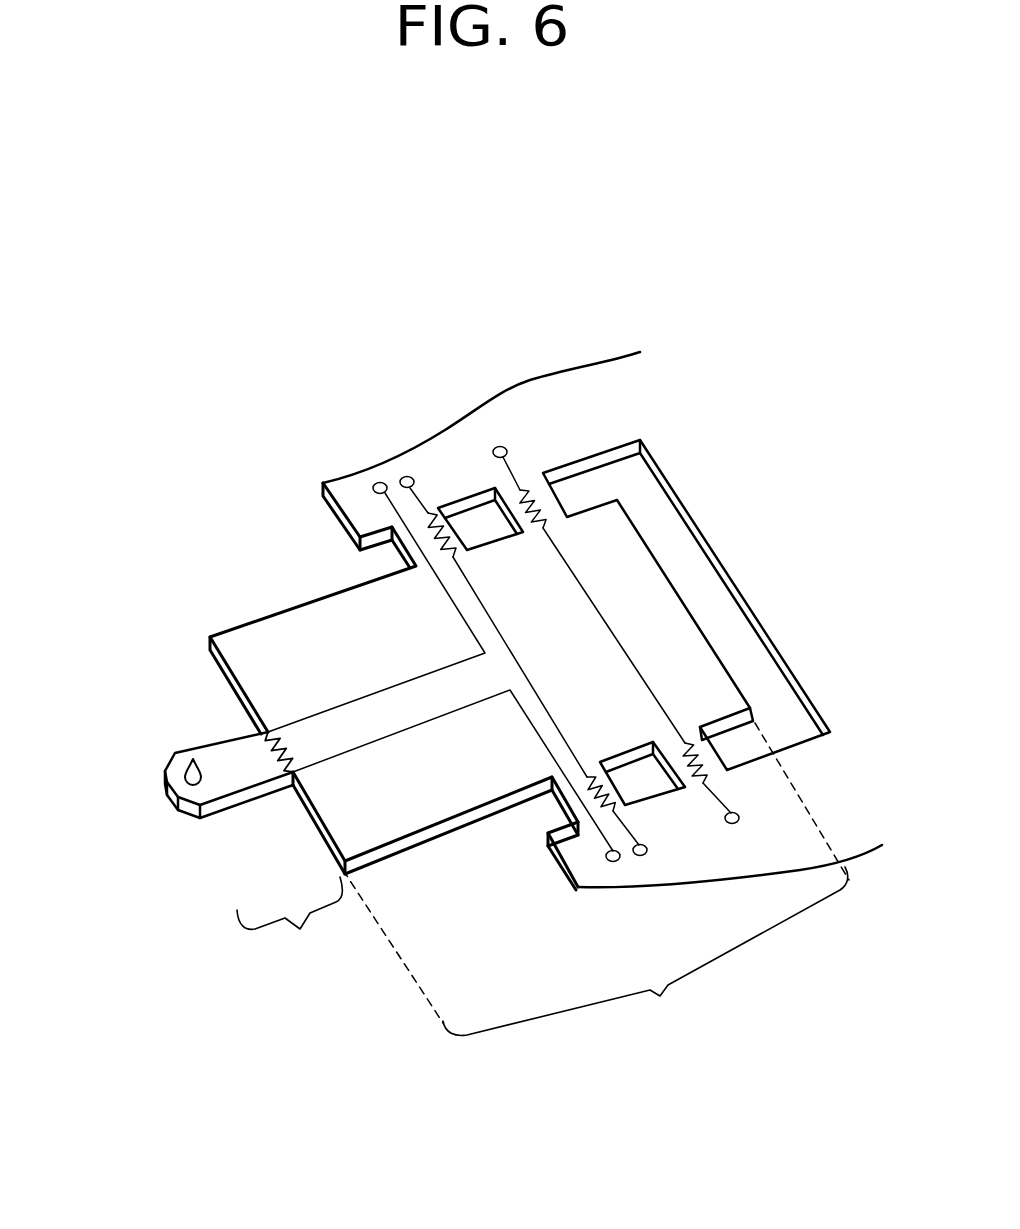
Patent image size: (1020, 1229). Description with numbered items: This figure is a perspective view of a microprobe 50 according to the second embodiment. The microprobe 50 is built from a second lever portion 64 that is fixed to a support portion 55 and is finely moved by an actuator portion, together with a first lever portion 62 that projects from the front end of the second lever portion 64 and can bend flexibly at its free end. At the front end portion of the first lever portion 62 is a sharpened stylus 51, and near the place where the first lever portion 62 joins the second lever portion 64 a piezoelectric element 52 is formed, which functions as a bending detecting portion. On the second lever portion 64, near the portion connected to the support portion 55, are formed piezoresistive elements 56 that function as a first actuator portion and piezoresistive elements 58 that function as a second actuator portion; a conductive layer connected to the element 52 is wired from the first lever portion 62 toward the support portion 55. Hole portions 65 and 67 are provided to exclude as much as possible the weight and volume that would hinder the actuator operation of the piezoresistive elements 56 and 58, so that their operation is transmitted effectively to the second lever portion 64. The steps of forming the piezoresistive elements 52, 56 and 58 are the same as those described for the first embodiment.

The microprobe 50 is at (352, 338).
The stylus 51 is at (170, 773).
The piezoelectric element 52 is at (285, 755).
The support portion 55 is at (797, 822).
The piezoresistive elements 56 is at (432, 513).
The piezoresistive elements 58 is at (523, 490).
The first lever portion 62 is at (340, 946).
The second lever portion 64 is at (646, 882).
The hole portion 65 is at (470, 518).
The hole portion 67 is at (702, 577).